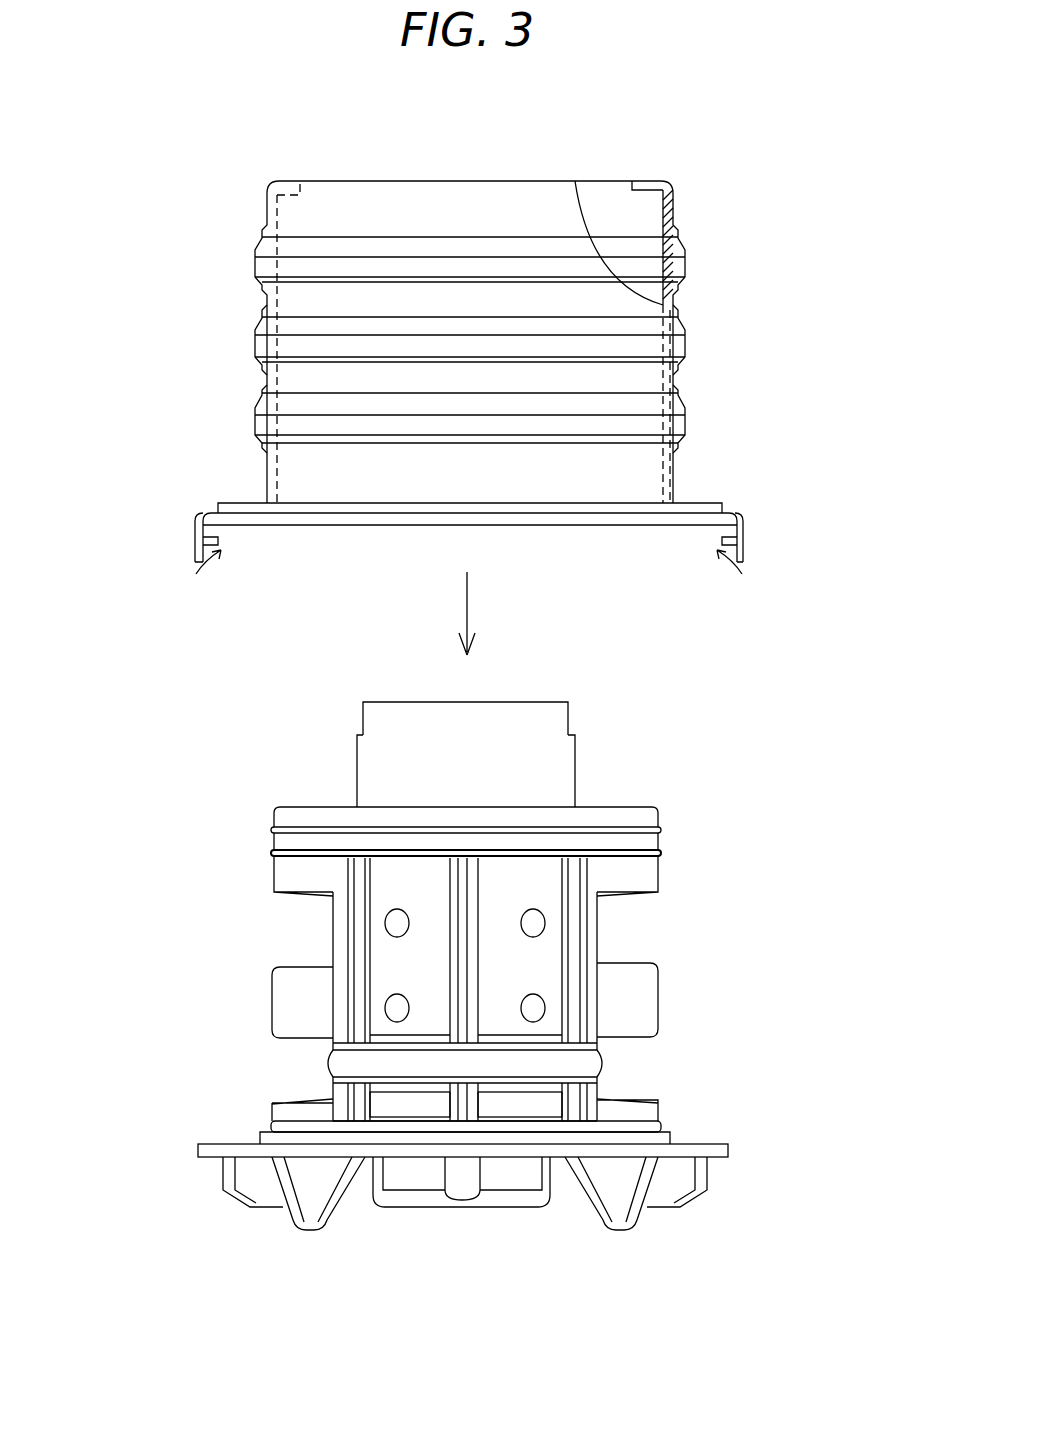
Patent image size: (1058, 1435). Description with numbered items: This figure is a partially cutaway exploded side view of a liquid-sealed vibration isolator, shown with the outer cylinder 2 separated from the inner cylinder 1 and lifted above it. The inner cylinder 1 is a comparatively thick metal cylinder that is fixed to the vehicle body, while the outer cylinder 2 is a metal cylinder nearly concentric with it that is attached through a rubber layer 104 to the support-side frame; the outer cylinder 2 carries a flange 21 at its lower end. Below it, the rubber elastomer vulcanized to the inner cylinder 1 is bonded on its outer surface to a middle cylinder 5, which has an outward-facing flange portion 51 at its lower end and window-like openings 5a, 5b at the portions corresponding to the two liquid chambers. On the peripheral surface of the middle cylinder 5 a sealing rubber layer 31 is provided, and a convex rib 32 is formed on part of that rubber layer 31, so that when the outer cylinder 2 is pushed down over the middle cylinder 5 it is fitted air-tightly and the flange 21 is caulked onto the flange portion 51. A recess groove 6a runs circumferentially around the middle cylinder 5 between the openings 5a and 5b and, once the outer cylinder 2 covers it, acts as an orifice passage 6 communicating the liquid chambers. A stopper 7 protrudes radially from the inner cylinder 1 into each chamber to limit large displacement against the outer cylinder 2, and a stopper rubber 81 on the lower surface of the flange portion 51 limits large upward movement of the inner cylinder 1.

The inner cylinder 1 is at (565, 715).
The outer cylinder 2 is at (564, 168).
The rubber layer 104 is at (673, 242).
The flange 21 is at (745, 545).
The convex rib 32 is at (663, 853).
The rubber layer 31 is at (290, 1108).
The middle cylinder 5 is at (628, 1198).
The window-like opening 5a is at (647, 895).
The window-like opening 5b is at (287, 897).
The flange portion 51 is at (210, 1160).
The recess groove 6a is at (595, 1066).
The orifice passage 6 is at (465, 1063).
The stopper 7 is at (285, 988).
The stopper rubber 81 is at (302, 1205).